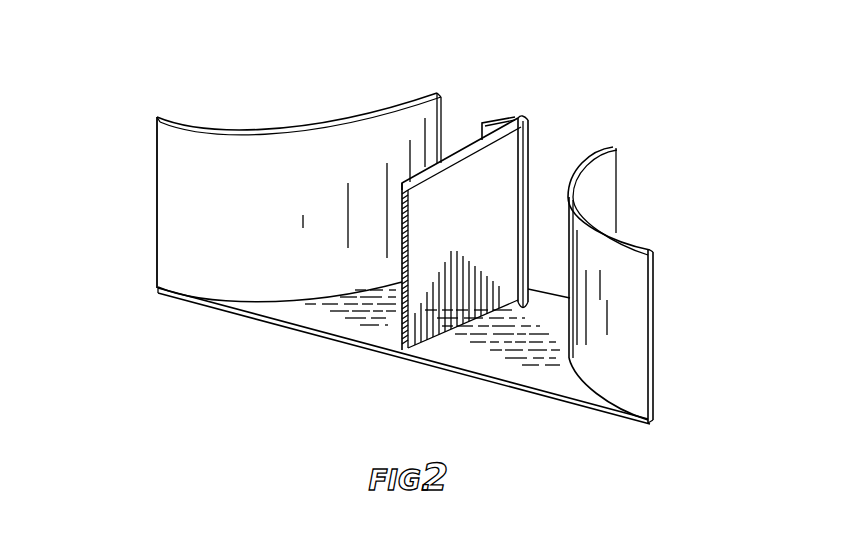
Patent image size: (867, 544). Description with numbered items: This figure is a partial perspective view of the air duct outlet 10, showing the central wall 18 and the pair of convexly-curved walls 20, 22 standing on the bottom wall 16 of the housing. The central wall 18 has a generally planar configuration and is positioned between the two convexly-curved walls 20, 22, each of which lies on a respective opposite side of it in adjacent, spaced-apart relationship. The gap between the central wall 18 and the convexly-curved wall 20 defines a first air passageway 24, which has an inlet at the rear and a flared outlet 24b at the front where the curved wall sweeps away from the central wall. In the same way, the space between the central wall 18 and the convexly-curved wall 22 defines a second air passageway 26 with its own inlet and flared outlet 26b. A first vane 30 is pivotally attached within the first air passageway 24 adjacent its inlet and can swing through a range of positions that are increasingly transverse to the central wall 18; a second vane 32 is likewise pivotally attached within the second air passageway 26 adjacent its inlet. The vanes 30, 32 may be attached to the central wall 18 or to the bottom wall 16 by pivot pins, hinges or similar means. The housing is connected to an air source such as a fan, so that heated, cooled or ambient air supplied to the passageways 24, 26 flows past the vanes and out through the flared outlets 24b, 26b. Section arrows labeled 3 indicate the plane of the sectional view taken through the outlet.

The air duct outlet 10 is at (678, 119).
The bottom wall 16 is at (337, 322).
The central wall 18 is at (423, 297).
The convexly-curved wall 20 is at (654, 335).
The convexly-curved wall 22 is at (157, 225).
The first air passageway 24 is at (552, 270).
The flared outlet 24b is at (547, 398).
The second air passageway 26 is at (332, 210).
The flared outlet 26b is at (245, 315).
The first vane 30 is at (530, 169).
The second vane 32 is at (495, 121).
The section line 3- 3 is at (375, 82).